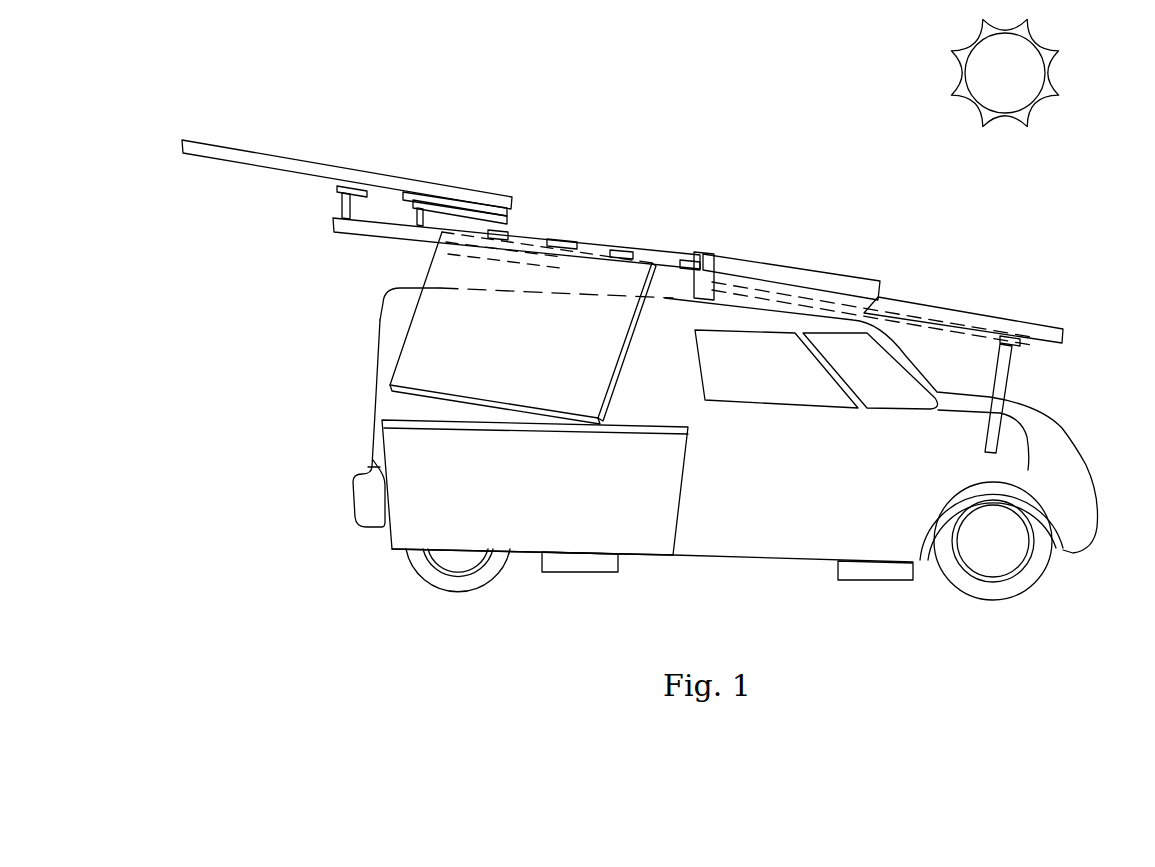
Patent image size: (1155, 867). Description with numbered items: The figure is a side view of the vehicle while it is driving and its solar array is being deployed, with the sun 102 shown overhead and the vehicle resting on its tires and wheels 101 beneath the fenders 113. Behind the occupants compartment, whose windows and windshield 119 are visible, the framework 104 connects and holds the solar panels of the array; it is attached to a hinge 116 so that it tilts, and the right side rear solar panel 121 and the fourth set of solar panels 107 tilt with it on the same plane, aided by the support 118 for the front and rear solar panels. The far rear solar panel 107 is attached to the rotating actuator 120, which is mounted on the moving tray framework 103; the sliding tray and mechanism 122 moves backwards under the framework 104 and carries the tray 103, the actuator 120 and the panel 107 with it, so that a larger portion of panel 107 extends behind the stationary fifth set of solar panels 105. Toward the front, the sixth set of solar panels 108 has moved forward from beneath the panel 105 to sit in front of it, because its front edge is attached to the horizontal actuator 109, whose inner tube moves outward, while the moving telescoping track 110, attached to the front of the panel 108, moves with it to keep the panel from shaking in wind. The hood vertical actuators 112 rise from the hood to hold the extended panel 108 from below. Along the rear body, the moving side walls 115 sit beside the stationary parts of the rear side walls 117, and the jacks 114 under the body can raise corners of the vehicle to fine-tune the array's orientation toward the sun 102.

The tires and wheels 101 is at (975, 554).
The sun 102 is at (987, 84).
The moving tray framework 103 is at (390, 243).
The framework for all solar panels behind the occupants compartment 104 is at (697, 251).
The fifth set of solar panels 105 is at (823, 268).
The fourth set of solar panels 107 is at (267, 153).
The sixth set of solar panels 108 is at (970, 313).
The horizontal actuator 109 is at (833, 301).
The moving telescoping track 110 is at (1041, 345).
The hood vertical actuators 112 is at (1025, 440).
The fenders 113 is at (923, 495).
The jacks 114 is at (586, 573).
The moving side walls 115 is at (562, 503).
The hinges 116 is at (500, 232).
The stationary parts of rear side walls 117 is at (467, 292).
The support for front and rear solar panels 118 is at (670, 300).
The windows and windshield 119 is at (750, 383).
The rotating actuator 120 is at (336, 186).
The right side rear solar panel(s) 121 is at (380, 320).
The sliding tray mechanism 122 is at (560, 243).